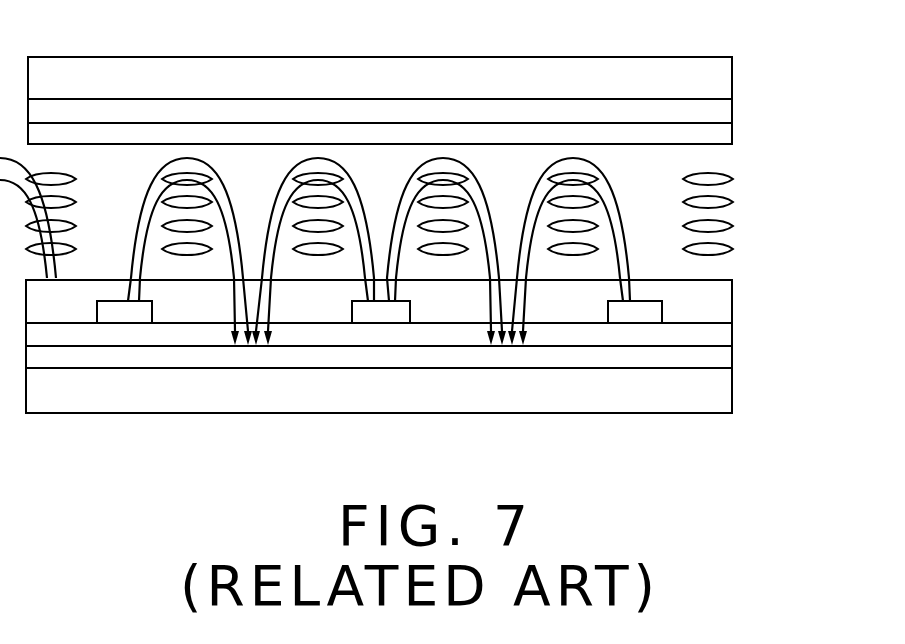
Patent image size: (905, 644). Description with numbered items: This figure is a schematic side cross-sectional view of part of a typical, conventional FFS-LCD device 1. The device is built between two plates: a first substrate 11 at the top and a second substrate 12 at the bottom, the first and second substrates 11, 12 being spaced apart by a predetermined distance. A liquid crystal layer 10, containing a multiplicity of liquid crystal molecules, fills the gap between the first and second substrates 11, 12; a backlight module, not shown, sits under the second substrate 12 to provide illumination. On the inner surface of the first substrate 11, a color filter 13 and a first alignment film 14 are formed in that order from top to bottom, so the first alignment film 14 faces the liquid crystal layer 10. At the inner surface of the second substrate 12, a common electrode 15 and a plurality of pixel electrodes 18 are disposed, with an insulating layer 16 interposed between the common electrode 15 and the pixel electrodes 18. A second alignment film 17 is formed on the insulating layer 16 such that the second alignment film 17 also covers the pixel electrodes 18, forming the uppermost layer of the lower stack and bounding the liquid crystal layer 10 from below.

The FFS-LCD device 1 is at (475, 45).
The liquid crystal layer 10 is at (742, 171).
The first substrate 11 is at (720, 70).
The second substrate 12 is at (712, 398).
The color filter 13 is at (720, 111).
The first alignment film 14 is at (720, 136).
The common electrode 15 is at (717, 365).
The insulating layer 16 is at (717, 338).
The second alignment film 17 is at (712, 308).
The pixel electrodes 18 is at (645, 312).